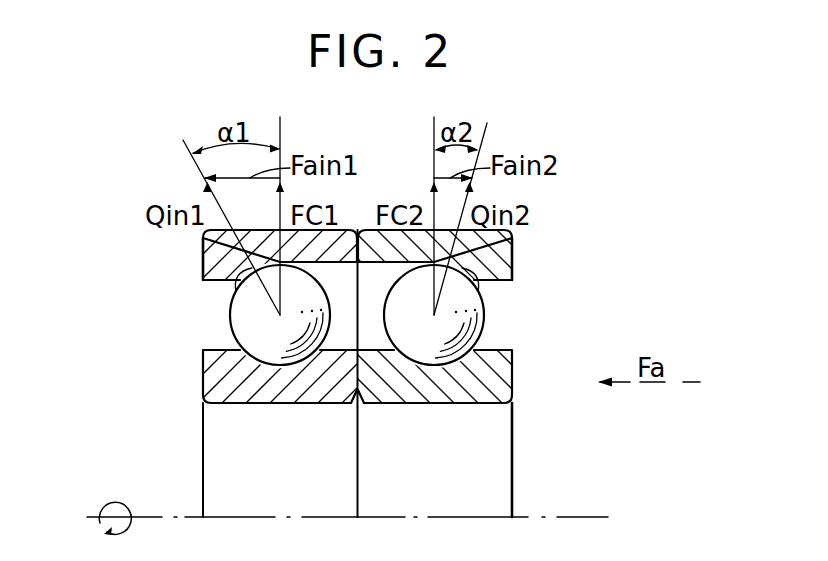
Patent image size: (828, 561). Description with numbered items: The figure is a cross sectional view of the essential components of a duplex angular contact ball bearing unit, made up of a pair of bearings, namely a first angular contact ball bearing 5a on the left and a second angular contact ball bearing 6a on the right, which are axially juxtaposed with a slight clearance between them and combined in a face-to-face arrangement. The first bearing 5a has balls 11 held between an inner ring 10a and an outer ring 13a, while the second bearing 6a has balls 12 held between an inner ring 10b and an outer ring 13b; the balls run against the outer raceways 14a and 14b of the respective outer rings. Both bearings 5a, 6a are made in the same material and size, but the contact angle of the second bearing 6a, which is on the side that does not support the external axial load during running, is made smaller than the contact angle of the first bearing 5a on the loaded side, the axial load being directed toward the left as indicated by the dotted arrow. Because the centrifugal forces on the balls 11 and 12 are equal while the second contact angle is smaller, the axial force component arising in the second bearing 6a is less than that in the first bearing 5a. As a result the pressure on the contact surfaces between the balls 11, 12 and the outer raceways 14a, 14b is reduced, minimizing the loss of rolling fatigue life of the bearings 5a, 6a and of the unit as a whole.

The first angular contact ball bearing 5a is at (284, 329).
The second angular contact ball bearing 6a is at (427, 329).
The inner ring 10a is at (204, 392).
The inner ring 10b is at (512, 392).
The balls 11 is at (236, 331).
The balls 12 is at (481, 331).
The outer ring 13a is at (203, 260).
The outer ring 13b is at (512, 257).
The outer raceway 14a is at (203, 298).
The outer raceway 14b is at (512, 294).